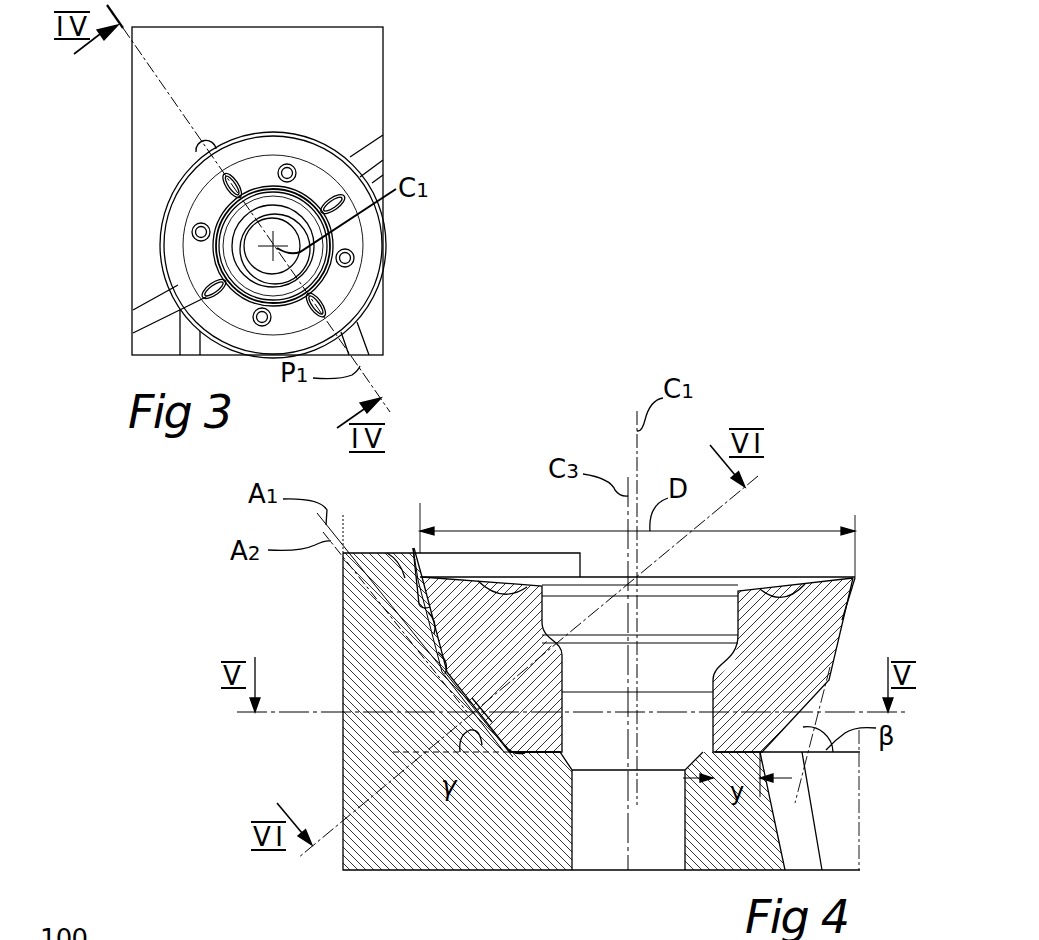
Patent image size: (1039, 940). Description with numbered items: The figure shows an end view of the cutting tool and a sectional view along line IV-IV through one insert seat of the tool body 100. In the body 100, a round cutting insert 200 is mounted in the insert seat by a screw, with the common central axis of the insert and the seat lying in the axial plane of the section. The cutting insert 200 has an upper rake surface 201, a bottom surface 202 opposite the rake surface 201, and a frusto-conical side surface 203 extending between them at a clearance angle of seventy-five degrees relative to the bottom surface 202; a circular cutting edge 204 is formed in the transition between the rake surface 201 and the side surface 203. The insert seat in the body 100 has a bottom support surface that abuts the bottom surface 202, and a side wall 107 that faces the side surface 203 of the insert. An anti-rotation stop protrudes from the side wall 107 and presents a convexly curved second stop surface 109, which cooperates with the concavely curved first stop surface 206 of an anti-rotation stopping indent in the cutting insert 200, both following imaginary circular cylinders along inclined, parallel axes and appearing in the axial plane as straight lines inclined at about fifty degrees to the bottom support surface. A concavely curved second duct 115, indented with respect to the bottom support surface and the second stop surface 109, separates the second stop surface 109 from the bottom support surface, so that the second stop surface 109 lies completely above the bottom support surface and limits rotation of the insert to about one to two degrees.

In FIG. 3, the body 100 is at (370, 90).
In FIG. 4, the body 100 is at (834, 796).
In FIG. 3, the cutting insert 200 is at (370, 283).
In FIG. 4, the cutting insert 200 is at (808, 616).
In FIG. 3, the upper rake surface 201 is at (372, 258).
In FIG. 4, the upper rake surface 201 is at (750, 585).
In FIG. 3, the circular cutting edge 204 is at (362, 332).
In FIG. 4, the circular cutting edge 204 is at (857, 578).
In FIG. 4, the frusto-conical side surface 203 is at (421, 606).
In FIG. 4, the side wall 107 is at (434, 626).
In FIG. 4, the second stop surface 109 is at (462, 690).
In FIG. 4, the first stop surface 206 is at (478, 705).
In FIG. 4, the bottom surface 202 is at (543, 752).
In FIG. 4, the second duct 115 is at (533, 755).